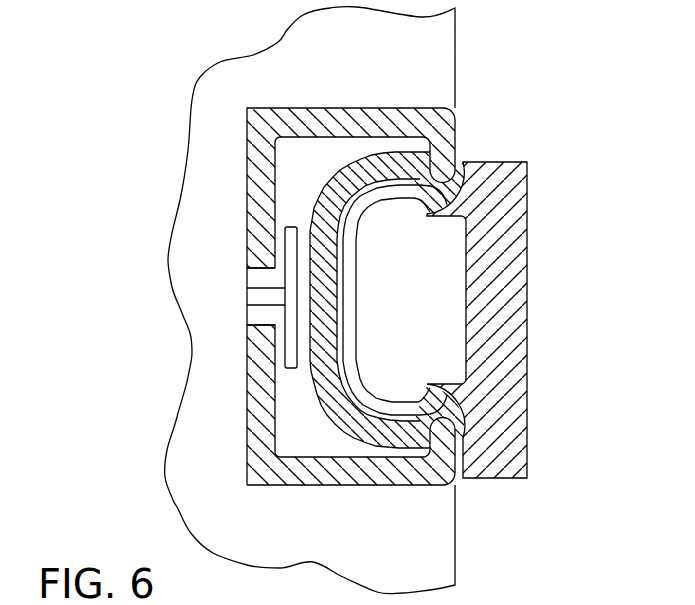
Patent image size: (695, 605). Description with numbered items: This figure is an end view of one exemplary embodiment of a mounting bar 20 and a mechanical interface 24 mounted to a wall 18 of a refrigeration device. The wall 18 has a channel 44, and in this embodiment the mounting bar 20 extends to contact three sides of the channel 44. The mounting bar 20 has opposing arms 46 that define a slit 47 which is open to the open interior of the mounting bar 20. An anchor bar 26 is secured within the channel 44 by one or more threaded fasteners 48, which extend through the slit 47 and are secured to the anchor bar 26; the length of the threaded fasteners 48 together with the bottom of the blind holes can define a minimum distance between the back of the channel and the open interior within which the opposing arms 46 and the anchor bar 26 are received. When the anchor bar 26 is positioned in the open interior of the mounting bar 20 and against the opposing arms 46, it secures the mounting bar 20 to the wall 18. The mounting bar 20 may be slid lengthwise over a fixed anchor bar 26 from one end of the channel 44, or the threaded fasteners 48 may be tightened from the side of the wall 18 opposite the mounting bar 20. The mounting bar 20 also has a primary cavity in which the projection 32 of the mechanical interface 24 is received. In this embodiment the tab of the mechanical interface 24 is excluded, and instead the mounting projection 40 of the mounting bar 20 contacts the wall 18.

The wall 18 is at (352, 108).
The mounting bar 20 is at (323, 223).
The mechanical interface 24 is at (522, 285).
The anchor bar 26 is at (288, 237).
The projection 32 is at (368, 300).
The mounting projection 40 is at (441, 430).
The channel 44 is at (308, 440).
The opposing arms 46 is at (256, 152).
The slit 47 is at (248, 317).
The threaded fasteners 48 is at (258, 294).